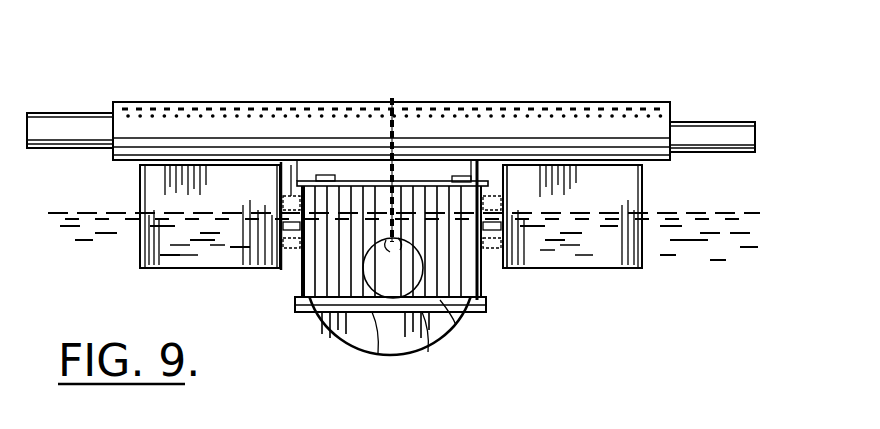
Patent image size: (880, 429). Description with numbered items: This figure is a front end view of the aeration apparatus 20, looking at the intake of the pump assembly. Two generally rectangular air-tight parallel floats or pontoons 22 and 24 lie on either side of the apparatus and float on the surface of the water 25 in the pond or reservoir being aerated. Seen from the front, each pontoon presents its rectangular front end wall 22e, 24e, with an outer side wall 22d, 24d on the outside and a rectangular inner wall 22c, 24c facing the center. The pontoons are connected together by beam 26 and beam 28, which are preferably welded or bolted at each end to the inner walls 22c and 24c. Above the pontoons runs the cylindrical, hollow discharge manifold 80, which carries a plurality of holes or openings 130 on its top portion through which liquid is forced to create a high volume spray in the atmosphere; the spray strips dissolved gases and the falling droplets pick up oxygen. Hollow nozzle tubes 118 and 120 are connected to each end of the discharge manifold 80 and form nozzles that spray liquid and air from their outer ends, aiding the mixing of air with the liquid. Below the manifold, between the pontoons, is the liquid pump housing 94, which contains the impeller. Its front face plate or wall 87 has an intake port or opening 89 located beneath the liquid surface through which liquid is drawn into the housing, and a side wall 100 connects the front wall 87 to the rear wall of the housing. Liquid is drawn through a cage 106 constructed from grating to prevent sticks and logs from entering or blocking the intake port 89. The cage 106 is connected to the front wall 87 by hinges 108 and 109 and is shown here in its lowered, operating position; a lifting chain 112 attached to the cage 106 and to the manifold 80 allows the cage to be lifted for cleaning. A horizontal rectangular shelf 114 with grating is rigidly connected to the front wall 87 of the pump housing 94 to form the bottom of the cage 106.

The aeration apparatus 20 is at (400, 83).
The discharge manifold 80 is at (406, 99).
The holes or openings 130 is at (196, 114).
The hollow nozzle tube 118 is at (45, 122).
The hollow nozzle tube 120 is at (700, 134).
The surface of the water 25 is at (60, 212).
The pontoon 24 is at (170, 238).
The front end wall 24e is at (262, 196).
The outer side wall 24d is at (140, 247).
The inner wall 24c is at (283, 262).
The pontoon 22 is at (611, 235).
The front end wall 22e is at (619, 196).
The outer side wall 22d is at (645, 262).
The inner wall 22c is at (496, 258).
The cage 106 is at (383, 229).
The liquid pump housing 94 is at (325, 338).
The beam 28 is at (484, 300).
The hinge 108 is at (325, 175).
The hinge 109 is at (462, 176).
The beam 26 is at (288, 197).
The lifting chain 112 is at (393, 102).
The side wall 100 is at (413, 324).
The horizontal rectangular shelf 114 is at (380, 356).
The front face plate or wall 87 is at (426, 345).
The intake port or opening 89 is at (456, 327).